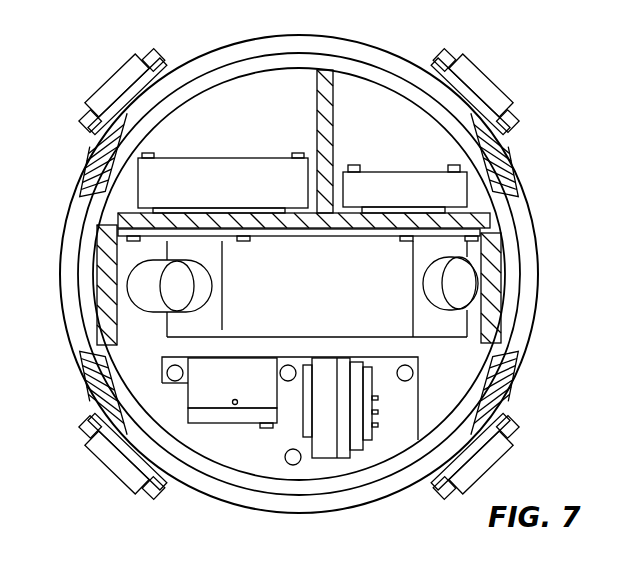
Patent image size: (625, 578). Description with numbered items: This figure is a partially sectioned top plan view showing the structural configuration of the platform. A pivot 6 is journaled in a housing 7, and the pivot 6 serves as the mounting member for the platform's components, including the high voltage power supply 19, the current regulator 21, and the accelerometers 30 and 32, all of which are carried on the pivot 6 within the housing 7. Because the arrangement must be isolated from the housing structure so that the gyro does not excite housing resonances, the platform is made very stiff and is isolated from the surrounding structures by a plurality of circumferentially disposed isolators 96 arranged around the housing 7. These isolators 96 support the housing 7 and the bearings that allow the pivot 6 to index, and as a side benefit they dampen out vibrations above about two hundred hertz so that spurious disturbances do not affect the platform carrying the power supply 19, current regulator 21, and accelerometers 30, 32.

The pivot 6 is at (112, 200).
The housing 7 is at (525, 206).
The high voltage power supply 19 is at (228, 191).
The current regulator 21 is at (411, 201).
The accelerometer 30 is at (186, 392).
The accelerometer 32 is at (326, 458).
The isolator 96 is at (85, 100).